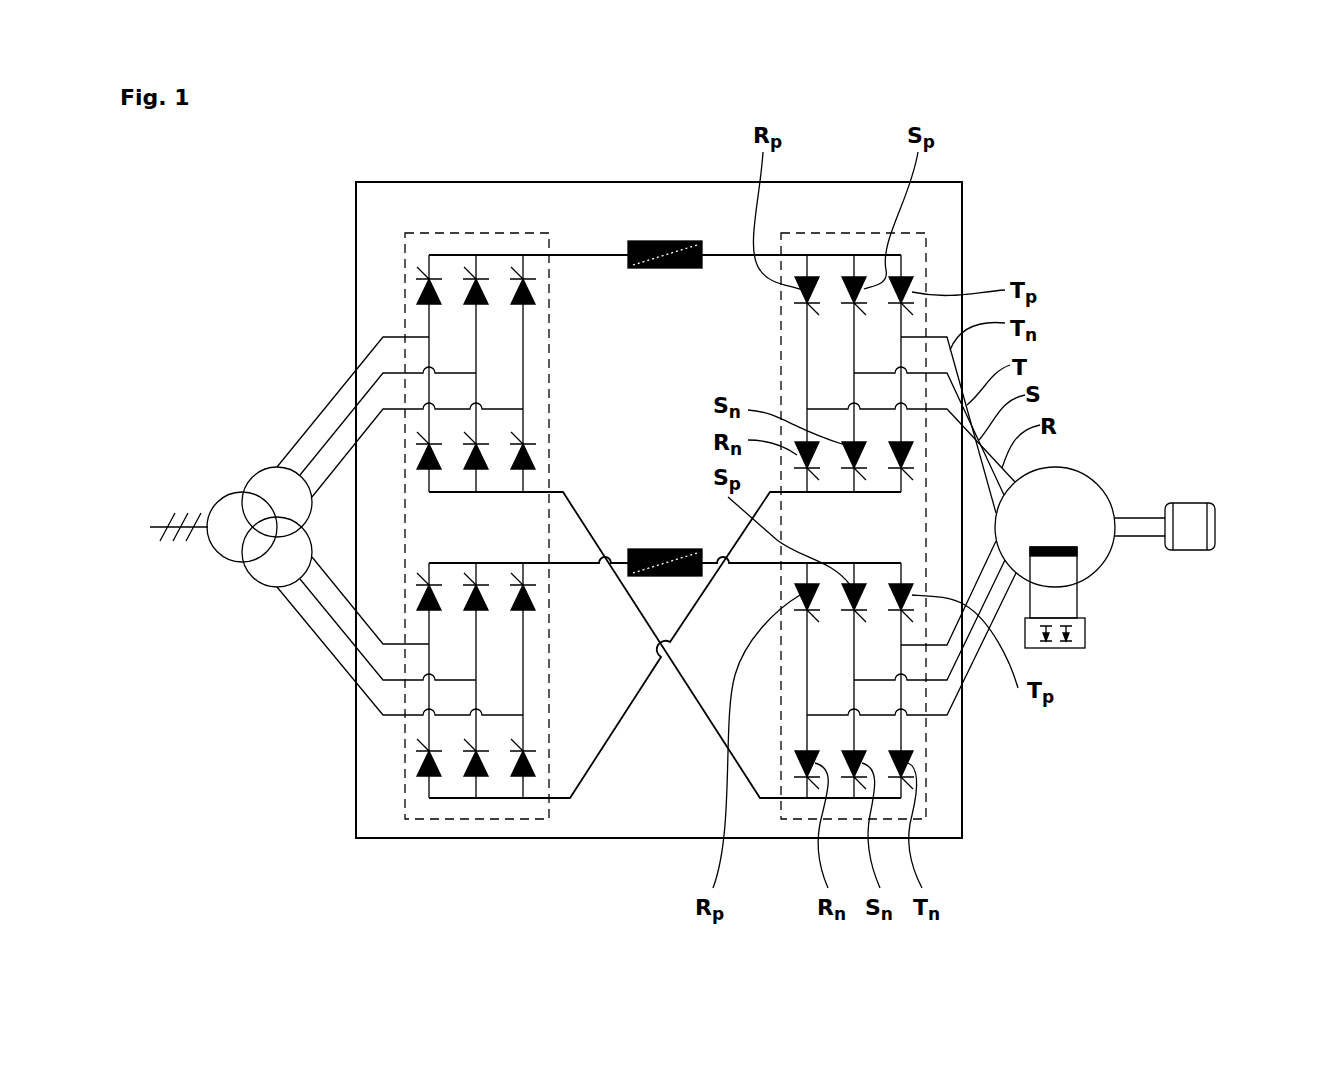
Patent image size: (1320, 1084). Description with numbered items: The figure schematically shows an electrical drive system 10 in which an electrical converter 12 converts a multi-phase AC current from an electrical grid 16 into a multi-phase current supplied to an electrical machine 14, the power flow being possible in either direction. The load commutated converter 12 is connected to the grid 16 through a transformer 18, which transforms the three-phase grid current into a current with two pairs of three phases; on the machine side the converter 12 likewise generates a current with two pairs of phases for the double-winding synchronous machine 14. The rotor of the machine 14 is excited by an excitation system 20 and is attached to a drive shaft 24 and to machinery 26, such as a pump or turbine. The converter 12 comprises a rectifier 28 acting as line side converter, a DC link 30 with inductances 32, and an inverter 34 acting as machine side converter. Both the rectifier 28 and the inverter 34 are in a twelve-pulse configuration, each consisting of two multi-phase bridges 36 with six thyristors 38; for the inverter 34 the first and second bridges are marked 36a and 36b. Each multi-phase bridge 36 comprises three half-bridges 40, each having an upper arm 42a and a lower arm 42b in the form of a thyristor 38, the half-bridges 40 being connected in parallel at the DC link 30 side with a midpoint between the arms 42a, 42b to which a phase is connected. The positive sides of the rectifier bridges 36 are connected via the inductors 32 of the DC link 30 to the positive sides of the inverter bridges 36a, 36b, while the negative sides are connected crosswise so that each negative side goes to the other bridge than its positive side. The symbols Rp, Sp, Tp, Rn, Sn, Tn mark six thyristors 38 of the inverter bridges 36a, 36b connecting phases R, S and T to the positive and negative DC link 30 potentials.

The electrical drive system 10 is at (1126, 178).
The electrical converter 12 is at (965, 803).
The electrical machine 14 is at (1091, 476).
The electrical grid 16 is at (170, 498).
The transformer 18 is at (255, 468).
The excitation system 20 is at (1085, 633).
The drive shaft 24 is at (1138, 510).
The machinery 26 is at (1217, 527).
The rectifier 28 is at (472, 233).
The DC link 30 is at (670, 228).
The inductances 32 is at (663, 272).
The inverter 34 is at (870, 233).
The multi-phase bridge 36 is at (572, 515).
The first multi-phase bridge 36a is at (920, 262).
The second multi-phase bridge 36b is at (926, 730).
The thyristor 38 is at (805, 763).
The half-bridge 40 is at (428, 242).
The upper arm 42a is at (418, 283).
The lower arm 42b is at (420, 455).